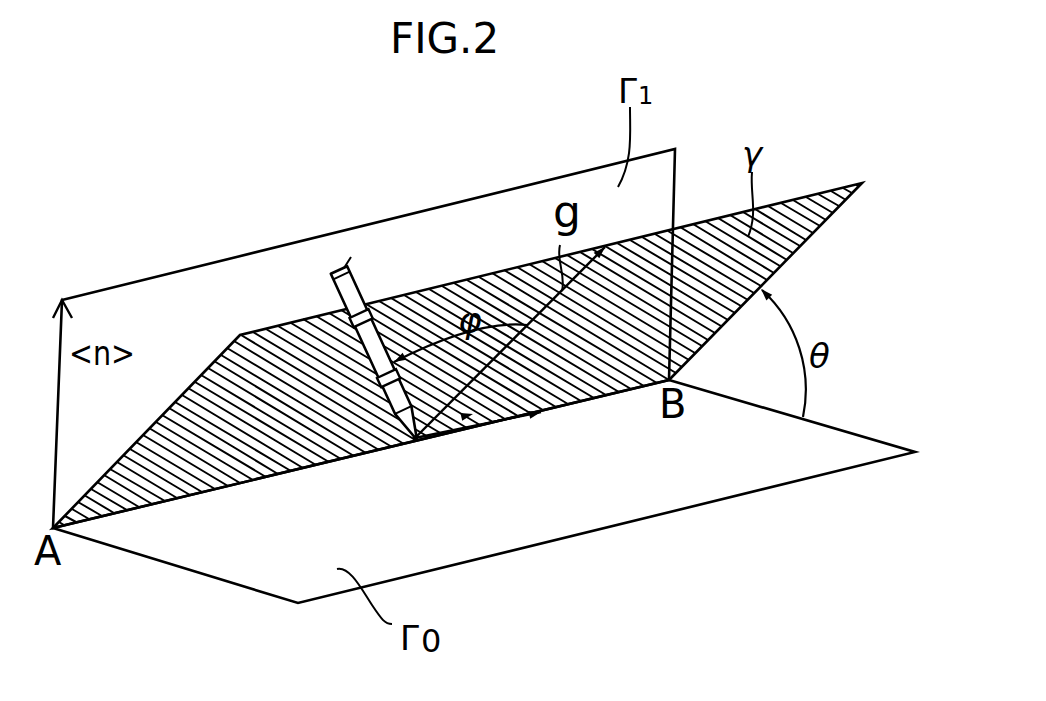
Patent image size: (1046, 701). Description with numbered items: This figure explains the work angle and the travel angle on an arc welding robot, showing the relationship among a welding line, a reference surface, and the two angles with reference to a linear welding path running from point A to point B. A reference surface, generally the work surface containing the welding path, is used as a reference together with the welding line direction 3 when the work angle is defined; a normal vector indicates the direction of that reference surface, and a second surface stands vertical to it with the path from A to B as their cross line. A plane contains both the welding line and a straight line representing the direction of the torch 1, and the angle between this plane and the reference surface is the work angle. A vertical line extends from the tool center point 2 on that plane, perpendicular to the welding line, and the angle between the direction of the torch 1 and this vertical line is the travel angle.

The torch 1 is at (378, 289).
The tool center point 2 is at (415, 438).
The welding line direction 3 is at (497, 422).